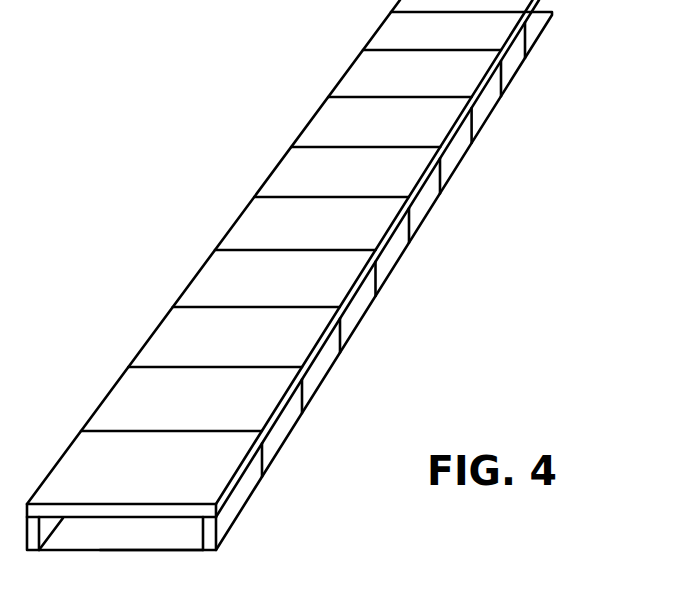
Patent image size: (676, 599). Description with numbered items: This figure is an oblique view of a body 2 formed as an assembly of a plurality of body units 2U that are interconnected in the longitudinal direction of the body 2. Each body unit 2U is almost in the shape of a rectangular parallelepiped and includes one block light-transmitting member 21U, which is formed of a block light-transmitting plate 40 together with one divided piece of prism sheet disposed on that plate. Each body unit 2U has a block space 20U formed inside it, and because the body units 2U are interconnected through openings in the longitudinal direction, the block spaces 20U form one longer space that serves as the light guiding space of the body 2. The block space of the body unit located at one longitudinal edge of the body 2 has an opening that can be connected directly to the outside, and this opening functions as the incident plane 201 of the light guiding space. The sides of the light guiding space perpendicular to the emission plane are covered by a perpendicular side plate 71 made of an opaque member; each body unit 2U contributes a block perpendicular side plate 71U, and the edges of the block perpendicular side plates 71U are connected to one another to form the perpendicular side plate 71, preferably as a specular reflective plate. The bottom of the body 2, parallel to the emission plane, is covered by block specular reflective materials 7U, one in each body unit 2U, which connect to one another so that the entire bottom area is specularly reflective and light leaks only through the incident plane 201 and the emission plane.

The body 2 is at (195, 242).
The body unit 2U is at (142, 390).
The block specular reflective material 7U is at (88, 540).
The perpendicular side plate 71 is at (358, 307).
The block perpendicular side plate 71U is at (322, 363).
The block light-transmitting plate 40 is at (248, 385).
The block light-transmitting member 21U is at (255, 406).
The incident plane 201 is at (180, 533).
The block space 20U is at (147, 532).